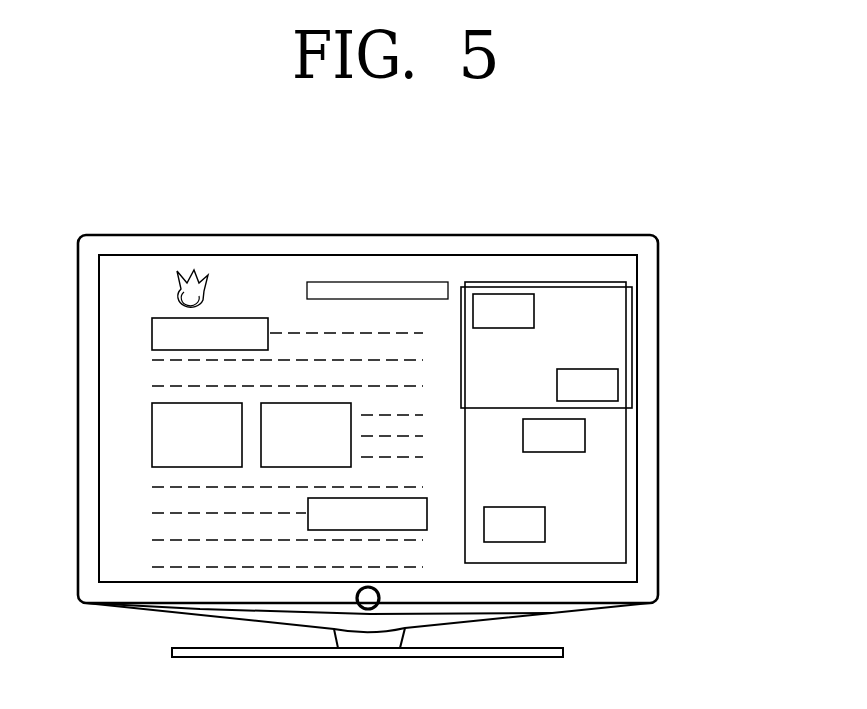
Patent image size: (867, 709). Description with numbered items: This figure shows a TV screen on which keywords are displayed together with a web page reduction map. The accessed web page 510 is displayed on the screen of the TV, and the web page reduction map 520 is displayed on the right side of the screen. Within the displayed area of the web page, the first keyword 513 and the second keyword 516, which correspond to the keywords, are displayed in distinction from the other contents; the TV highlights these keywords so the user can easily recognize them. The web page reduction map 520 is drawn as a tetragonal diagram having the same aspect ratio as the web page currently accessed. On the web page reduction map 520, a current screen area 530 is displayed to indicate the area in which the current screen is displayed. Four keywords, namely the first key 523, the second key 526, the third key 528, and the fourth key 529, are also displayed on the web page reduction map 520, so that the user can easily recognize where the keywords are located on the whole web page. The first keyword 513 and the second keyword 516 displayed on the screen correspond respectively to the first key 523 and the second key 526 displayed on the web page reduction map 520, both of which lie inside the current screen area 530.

The web page 510 is at (293, 270).
The keyword 1 513 is at (157, 318).
The keyword 2 516 is at (427, 530).
The web page reduction map 520 is at (577, 282).
The key 1 523 is at (502, 294).
The key 2 526 is at (618, 385).
The key 3 528 is at (585, 432).
The key 4 529 is at (545, 523).
The current screen area 530 is at (633, 327).